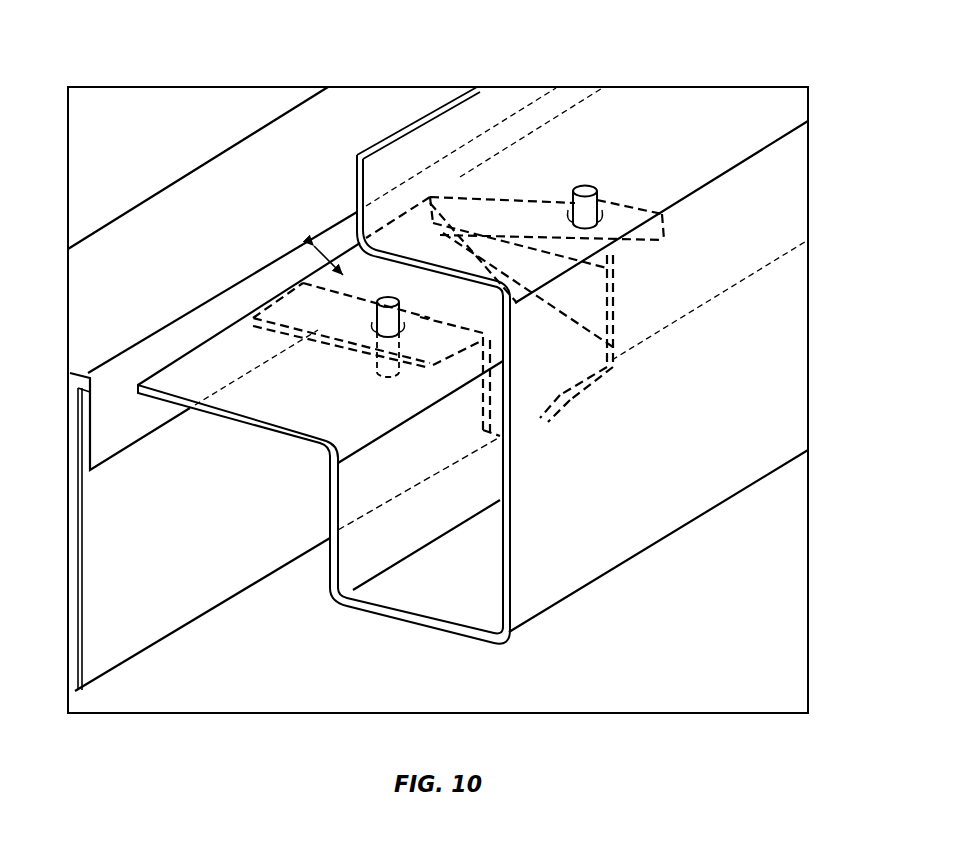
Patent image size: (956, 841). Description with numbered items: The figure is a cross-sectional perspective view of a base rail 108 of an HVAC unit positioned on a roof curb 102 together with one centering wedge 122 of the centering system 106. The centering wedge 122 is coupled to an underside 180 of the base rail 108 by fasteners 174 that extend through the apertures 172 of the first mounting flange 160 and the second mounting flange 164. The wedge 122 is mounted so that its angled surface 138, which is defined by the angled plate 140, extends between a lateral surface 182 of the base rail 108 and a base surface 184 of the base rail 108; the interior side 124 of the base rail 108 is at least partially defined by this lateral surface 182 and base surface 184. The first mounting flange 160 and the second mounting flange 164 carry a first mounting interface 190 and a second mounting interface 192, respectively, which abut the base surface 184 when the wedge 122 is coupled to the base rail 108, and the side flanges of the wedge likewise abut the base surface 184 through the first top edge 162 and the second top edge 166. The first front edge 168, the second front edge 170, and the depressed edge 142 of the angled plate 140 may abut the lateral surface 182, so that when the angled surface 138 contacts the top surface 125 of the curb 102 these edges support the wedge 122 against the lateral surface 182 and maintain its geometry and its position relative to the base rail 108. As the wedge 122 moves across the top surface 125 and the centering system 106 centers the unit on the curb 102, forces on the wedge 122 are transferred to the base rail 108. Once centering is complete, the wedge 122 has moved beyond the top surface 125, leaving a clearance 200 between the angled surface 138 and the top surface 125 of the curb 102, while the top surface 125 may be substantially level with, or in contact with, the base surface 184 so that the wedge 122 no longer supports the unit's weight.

The curb 102 is at (103, 656).
The centering system 106 is at (178, 610).
The base rail 108 is at (352, 363).
The centering wedge 122 is at (458, 172).
The interior side 124 is at (220, 580).
The top surface 125 is at (237, 178).
The angled surface 138 is at (518, 262).
The angled plate 140 is at (606, 378).
The depressed edge 142 is at (578, 425).
The first mounting flange 160 is at (287, 310).
The first top edge 162 is at (443, 313).
The second mounting flange 164 is at (510, 193).
The second top edge 166 is at (590, 247).
The first front edge 168 is at (518, 428).
The second front edge 170 is at (615, 302).
The apertures 172 is at (598, 220).
The fasteners 174 is at (586, 185).
The underside 180 is at (267, 588).
The lateral surface 182 is at (330, 553).
The base surface 184 is at (200, 410).
The first mounting interface 190 is at (297, 300).
The second mounting interface 192 is at (531, 197).
The clearance 200 is at (332, 258).